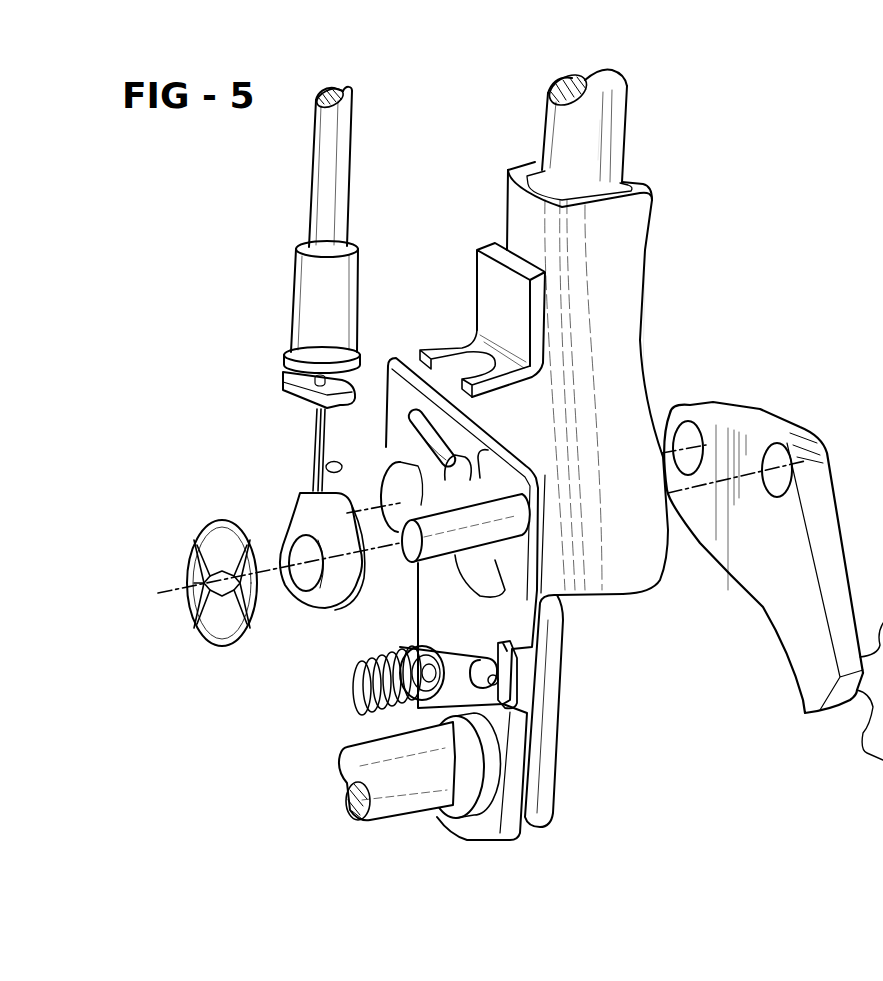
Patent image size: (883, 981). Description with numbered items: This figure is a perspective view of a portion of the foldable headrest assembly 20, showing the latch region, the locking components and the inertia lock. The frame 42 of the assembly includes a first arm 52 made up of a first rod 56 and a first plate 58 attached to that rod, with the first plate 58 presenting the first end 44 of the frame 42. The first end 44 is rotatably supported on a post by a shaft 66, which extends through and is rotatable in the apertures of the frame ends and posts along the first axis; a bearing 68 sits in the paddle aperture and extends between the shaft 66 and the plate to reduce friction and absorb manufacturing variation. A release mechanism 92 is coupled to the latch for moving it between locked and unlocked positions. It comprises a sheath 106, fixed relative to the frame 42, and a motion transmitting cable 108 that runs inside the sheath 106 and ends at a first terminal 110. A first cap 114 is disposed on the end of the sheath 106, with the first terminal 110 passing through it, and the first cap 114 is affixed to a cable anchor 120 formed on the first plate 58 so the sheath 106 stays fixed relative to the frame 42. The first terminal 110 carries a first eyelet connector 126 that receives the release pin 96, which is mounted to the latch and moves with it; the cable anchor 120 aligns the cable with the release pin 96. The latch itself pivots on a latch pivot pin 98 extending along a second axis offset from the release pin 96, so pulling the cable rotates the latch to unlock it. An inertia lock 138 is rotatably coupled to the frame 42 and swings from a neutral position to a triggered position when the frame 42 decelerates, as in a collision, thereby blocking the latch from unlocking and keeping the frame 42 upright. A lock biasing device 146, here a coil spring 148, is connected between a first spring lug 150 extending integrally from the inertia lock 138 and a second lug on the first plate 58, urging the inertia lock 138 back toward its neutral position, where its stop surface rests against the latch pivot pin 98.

The foldable headrest assembly 20 is at (196, 213).
The frame 42 is at (615, 110).
The first end 44 is at (650, 530).
The first arm 52 is at (615, 78).
The first rod 56 is at (613, 145).
The first plate 58 is at (630, 240).
The shaft 66 is at (397, 792).
The bearing 68 is at (467, 790).
The release mechanism 92 is at (323, 120).
The release pin 96 is at (400, 538).
The latch pivot pin 98 is at (386, 490).
The sheath 106 is at (340, 113).
The motion transmitting cable 108 is at (313, 438).
The first terminal 110 is at (326, 469).
The first cap 114 is at (310, 308).
The cable anchor 120 is at (537, 308).
The first eyelet connector 126 is at (347, 577).
The inertia lock 138 is at (373, 365).
The lock biasing device 146 is at (373, 693).
The coil spring 148 is at (397, 653).
The first spring lug 150 is at (540, 680).